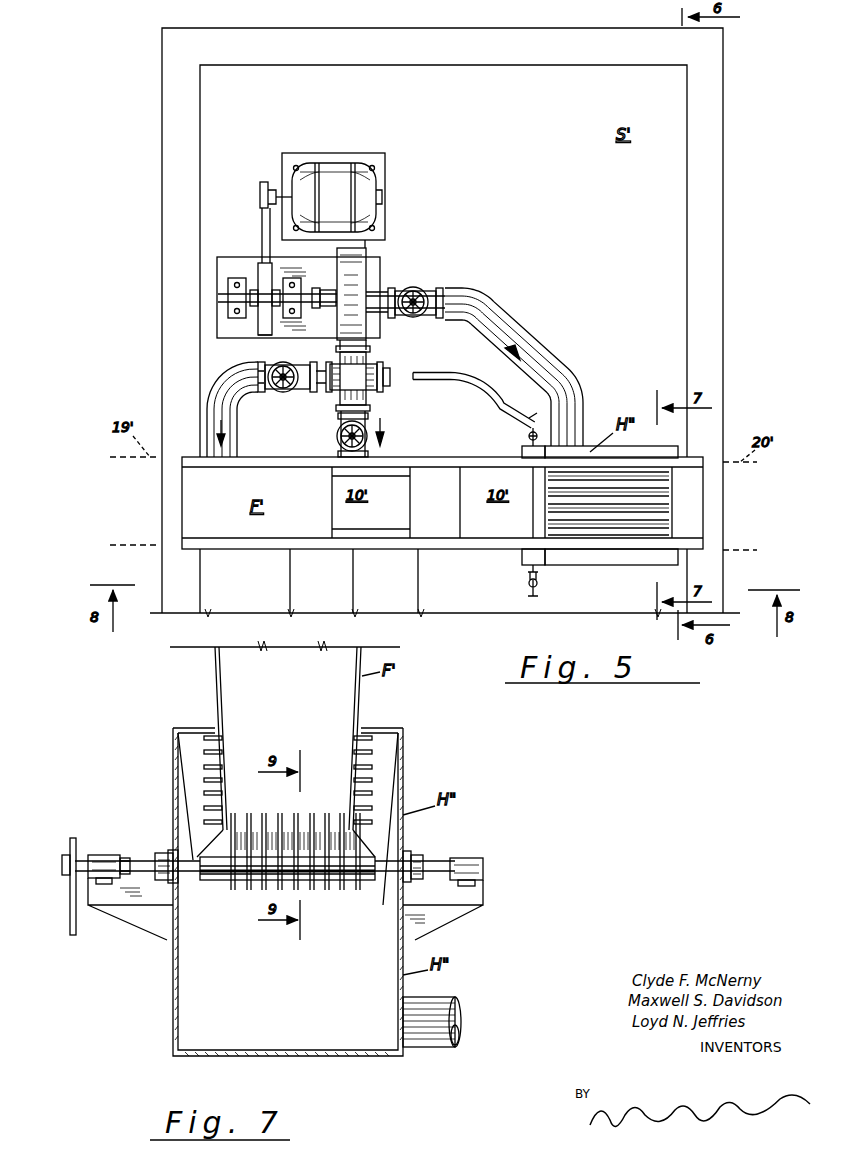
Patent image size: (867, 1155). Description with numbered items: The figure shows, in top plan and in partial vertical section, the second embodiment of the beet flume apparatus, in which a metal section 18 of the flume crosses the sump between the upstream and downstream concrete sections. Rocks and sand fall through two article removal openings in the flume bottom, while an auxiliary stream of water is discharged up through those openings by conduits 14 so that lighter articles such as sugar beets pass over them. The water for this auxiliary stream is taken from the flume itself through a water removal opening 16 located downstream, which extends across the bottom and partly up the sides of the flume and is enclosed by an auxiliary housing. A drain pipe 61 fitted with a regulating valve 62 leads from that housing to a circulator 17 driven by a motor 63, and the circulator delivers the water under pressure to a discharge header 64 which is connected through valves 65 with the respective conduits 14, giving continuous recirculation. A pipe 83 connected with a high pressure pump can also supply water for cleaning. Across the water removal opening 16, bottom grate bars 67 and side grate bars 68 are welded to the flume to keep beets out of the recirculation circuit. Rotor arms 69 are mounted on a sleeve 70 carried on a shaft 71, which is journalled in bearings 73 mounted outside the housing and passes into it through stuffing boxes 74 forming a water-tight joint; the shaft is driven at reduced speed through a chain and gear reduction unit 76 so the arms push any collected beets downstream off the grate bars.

In FIG. 5, the conduits 14 is at (230, 451).
In FIG. 5, the water removal opening 16 is at (662, 490).
In FIG. 5, the circulator 17 is at (352, 272).
In FIG. 5, the metal section 18 is at (452, 550).
In FIG. 5, the drain pipe 61 is at (520, 348).
In FIG. 7, the drain pipe 61 is at (432, 998).
In FIG. 5, the regulating valve 62 is at (426, 289).
In FIG. 5, the motor 63 is at (362, 192).
In FIG. 5, the discharge header 64 is at (372, 364).
In FIG. 5, the valves 65 is at (262, 360).
In FIG. 7, the bottom grate bars 67 is at (272, 822).
In FIG. 7, the side grate bars 68 is at (204, 738).
In FIG. 7, the rotor arms 69 is at (327, 890).
In FIG. 7, the sleeve 70 is at (358, 880).
In FIG. 7, the shaft 71 is at (140, 860).
In FIG. 7, the bearings 73 is at (105, 855).
In FIG. 7, the stuffing boxes 74 is at (165, 880).
In FIG. 7, the chain and gear reduction unit 76 is at (73, 838).
In FIG. 5, the pipe 83 is at (452, 382).